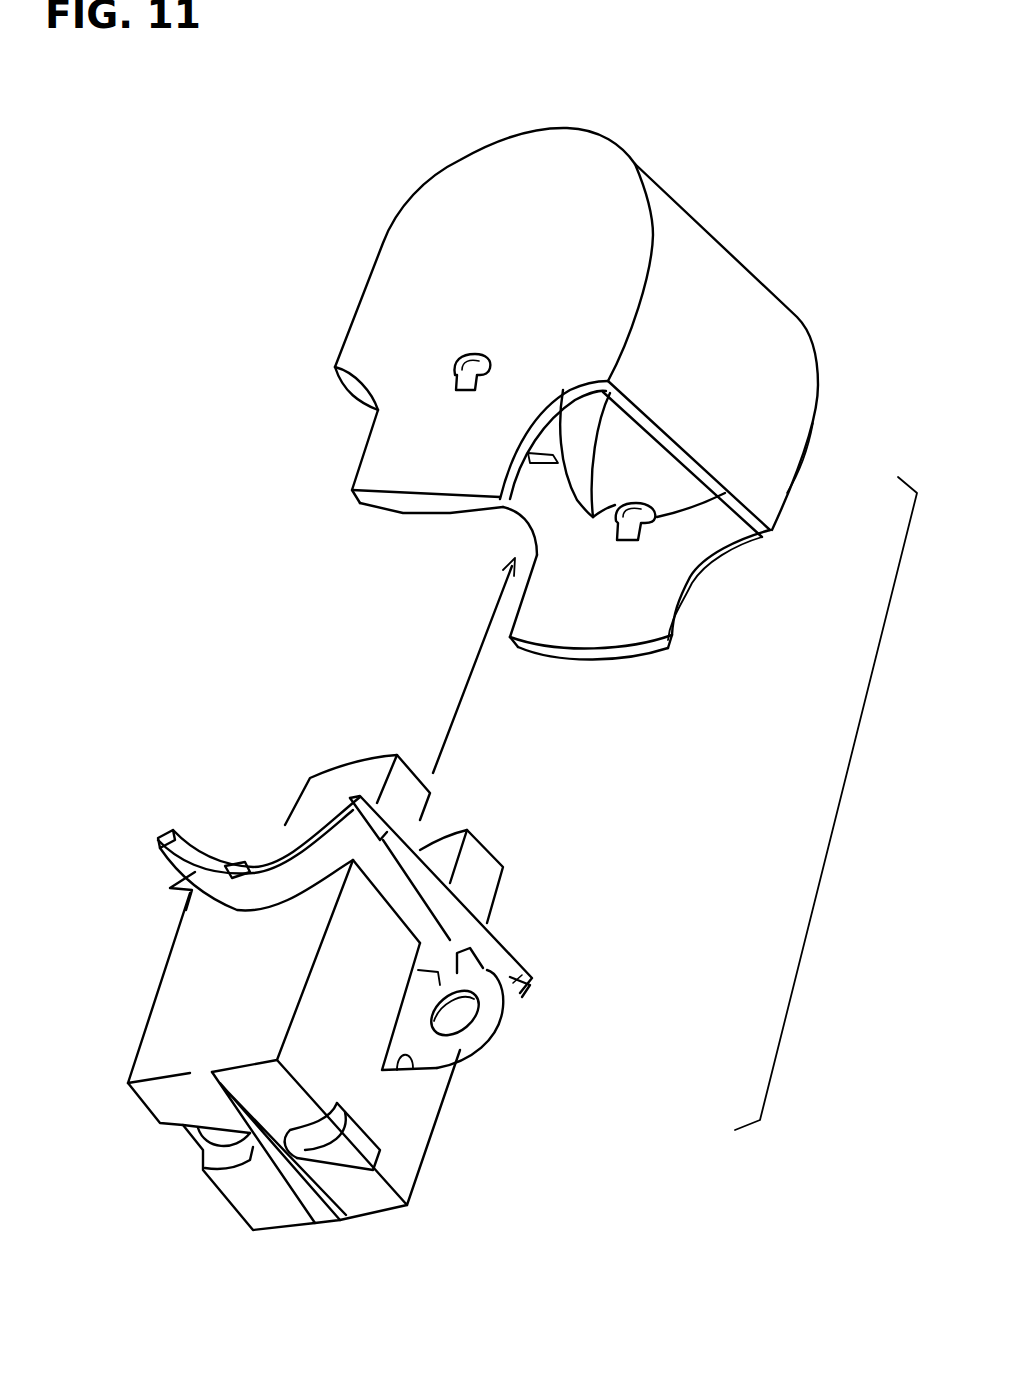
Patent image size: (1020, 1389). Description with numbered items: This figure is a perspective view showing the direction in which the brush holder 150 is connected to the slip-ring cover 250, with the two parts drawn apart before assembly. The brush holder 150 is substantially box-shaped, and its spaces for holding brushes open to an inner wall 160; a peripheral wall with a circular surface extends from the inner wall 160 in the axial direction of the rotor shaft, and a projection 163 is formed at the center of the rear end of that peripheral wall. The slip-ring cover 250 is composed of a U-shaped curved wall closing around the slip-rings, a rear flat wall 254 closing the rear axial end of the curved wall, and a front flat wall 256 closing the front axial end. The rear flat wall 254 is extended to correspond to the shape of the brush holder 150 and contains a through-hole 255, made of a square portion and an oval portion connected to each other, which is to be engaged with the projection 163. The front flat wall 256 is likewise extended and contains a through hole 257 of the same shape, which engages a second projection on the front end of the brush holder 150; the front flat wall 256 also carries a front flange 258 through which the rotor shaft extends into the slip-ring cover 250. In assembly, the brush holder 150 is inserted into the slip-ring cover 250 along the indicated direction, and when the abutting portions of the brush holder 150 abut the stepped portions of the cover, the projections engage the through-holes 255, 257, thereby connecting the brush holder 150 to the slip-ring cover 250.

The slip-ring cover 250 is at (573, 148).
The rear flat wall 254 is at (413, 273).
The through-hole 255 is at (457, 363).
The front flat wall 256 is at (663, 560).
The through hole 257 is at (637, 520).
The front flange 258 is at (580, 445).
The brush holder 150 is at (182, 983).
The inner wall 160 is at (208, 860).
The projection 163 is at (233, 855).